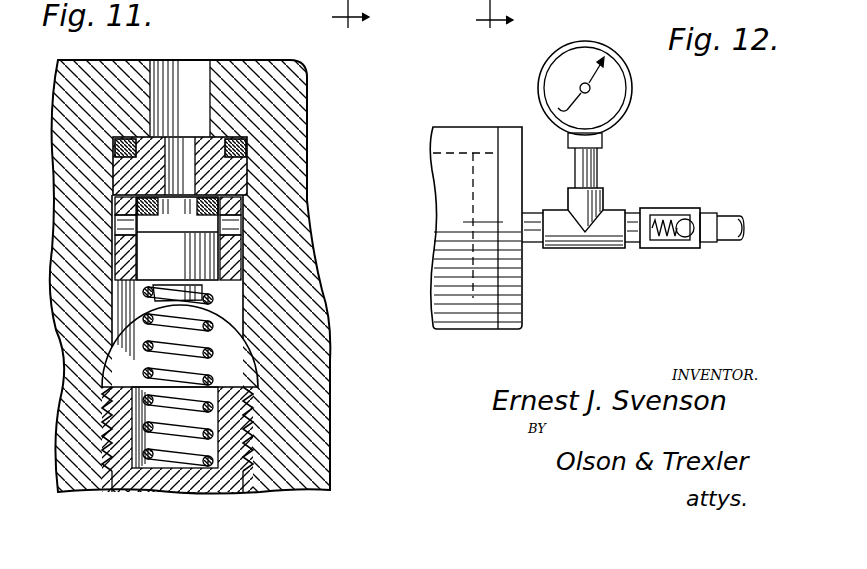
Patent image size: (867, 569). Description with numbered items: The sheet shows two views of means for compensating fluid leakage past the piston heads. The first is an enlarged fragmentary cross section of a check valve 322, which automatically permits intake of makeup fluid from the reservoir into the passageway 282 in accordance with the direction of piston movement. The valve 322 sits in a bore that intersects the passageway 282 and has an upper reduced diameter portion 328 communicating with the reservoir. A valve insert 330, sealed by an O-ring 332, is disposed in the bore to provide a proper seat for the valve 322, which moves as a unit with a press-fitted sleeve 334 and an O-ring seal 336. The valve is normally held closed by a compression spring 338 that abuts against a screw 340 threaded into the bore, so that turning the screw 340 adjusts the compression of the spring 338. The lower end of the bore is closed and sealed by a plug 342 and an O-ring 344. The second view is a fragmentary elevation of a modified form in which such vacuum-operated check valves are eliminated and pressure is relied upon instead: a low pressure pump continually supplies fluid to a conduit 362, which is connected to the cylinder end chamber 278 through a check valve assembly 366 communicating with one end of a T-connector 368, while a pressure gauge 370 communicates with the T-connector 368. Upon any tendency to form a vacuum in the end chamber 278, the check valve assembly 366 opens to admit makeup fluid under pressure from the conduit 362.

In FIG. 11, the upper reduced diameter portion 328 is at (152, 80).
In FIG. 11, the O-ring 344 is at (317, 22).
In FIG. 11, the plug 342 is at (458, 22).
In FIG. 11, the O-ring 332 is at (243, 137).
In FIG. 11, the valve insert 330 is at (233, 168).
In FIG. 11, the O-ring seal 336 is at (241, 207).
In FIG. 11, the press-fitted sleeve 334 is at (233, 253).
In FIG. 11, the check valve 322 is at (148, 268).
In FIG. 11, the passageway 282 is at (102, 376).
In FIG. 11, the compression spring 338 is at (213, 412).
In FIG. 11, the screw 340 is at (245, 477).
In FIG. 12, the end chamber 278 is at (482, 163).
In FIG. 12, the pressure gauge 370 is at (620, 122).
In FIG. 12, the T-connector 368 is at (610, 222).
In FIG. 12, the check valve assembly 366 is at (697, 212).
In FIG. 12, the conduit 362 is at (735, 221).